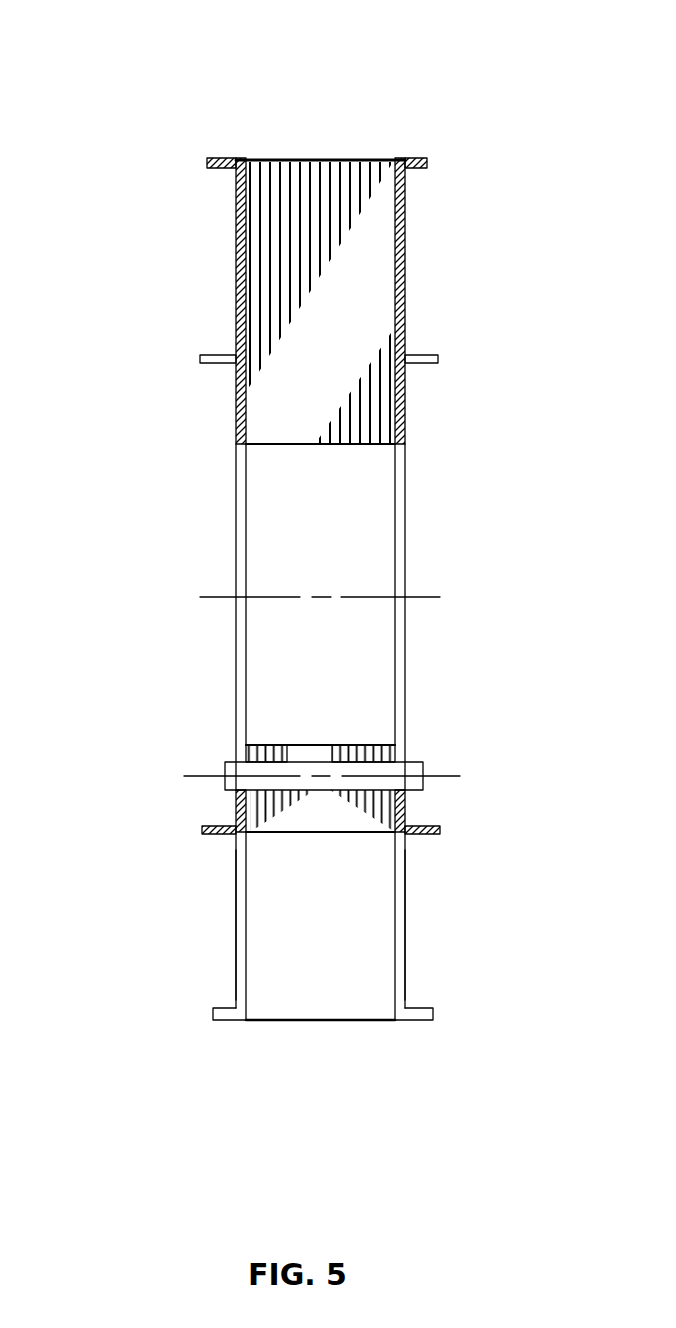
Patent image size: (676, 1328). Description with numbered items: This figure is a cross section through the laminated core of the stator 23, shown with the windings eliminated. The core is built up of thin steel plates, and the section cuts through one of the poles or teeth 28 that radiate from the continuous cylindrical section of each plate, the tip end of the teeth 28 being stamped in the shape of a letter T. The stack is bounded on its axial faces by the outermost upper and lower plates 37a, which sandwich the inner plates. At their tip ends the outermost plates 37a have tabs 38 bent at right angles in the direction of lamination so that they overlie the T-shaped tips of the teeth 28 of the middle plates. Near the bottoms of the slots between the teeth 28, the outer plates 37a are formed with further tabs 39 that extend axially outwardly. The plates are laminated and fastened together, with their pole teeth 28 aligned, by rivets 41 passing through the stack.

The stator 23 is at (344, 126).
The rivets 41 is at (428, 764).
The tabs 39 is at (428, 826).
The outermost upper and lower plates 37a is at (236, 930).
The tabs 38 is at (222, 1022).
The poles or teeth 28 is at (333, 1022).